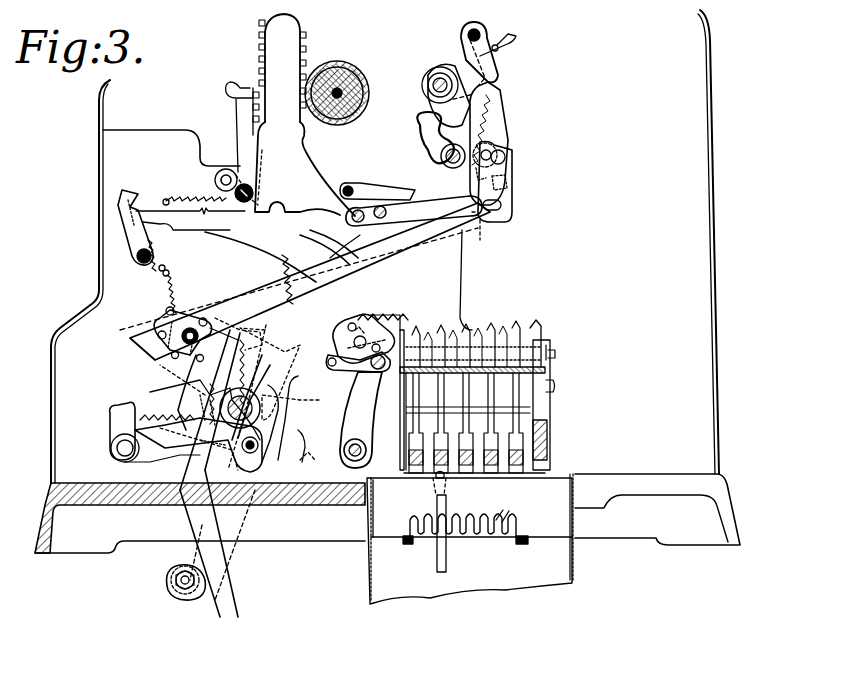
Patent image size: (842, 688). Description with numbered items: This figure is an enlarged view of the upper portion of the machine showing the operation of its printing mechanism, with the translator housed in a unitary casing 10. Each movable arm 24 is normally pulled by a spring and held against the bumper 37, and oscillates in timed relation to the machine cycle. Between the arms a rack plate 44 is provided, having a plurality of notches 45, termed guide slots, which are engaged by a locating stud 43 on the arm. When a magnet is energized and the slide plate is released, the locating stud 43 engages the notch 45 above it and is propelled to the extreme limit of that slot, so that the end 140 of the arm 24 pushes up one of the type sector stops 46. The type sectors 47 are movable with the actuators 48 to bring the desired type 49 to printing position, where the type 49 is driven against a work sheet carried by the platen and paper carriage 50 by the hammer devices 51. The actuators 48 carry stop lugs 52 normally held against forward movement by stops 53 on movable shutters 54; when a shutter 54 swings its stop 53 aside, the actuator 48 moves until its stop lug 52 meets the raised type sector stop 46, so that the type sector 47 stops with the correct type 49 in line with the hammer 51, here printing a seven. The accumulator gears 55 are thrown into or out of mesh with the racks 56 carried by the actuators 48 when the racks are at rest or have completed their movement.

The casing 10 is at (584, 571).
The movable arm 24 is at (446, 557).
The bumper 37 is at (408, 543).
The locating stud 43 is at (445, 520).
The rack plate 44 is at (389, 508).
The notch 45 is at (498, 521).
The type sector stop 46 is at (432, 330).
The type sector 47 is at (302, 182).
The actuator 48 is at (449, 284).
The type 49 is at (303, 58).
The platen and paper carriage 50 is at (351, 66).
The hammer device 51 is at (242, 88).
The stop lug 52 is at (442, 330).
The stop 53 is at (516, 334).
The movable shutter 54 is at (531, 346).
The accumulator gear 55 is at (350, 318).
The rack 56 is at (282, 267).
The end of arm 140 is at (444, 476).